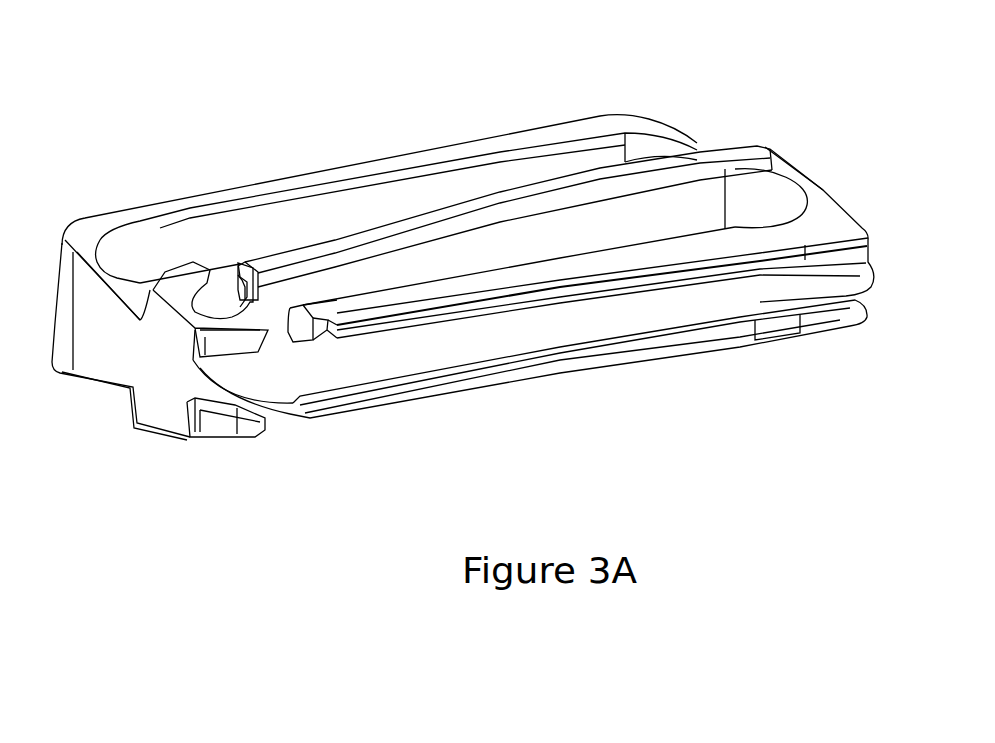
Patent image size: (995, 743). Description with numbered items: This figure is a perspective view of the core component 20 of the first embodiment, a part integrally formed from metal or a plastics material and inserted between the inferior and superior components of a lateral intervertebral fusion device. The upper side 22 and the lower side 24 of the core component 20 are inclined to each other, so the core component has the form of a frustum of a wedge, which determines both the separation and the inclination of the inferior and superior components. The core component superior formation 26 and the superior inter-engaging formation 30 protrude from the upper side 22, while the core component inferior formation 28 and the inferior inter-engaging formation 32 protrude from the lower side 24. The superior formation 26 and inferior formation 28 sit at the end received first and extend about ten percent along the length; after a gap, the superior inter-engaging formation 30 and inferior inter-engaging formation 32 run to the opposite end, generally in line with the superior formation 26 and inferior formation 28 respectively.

The core component 20 is at (722, 104).
The upper side 22 is at (124, 290).
The lower side 24 is at (94, 378).
The core component superior formation 26 is at (185, 278).
The core component inferior formation 28 is at (204, 440).
The superior inter-engaging formation 30 is at (405, 226).
The inferior inter-engaging formation 32 is at (440, 392).